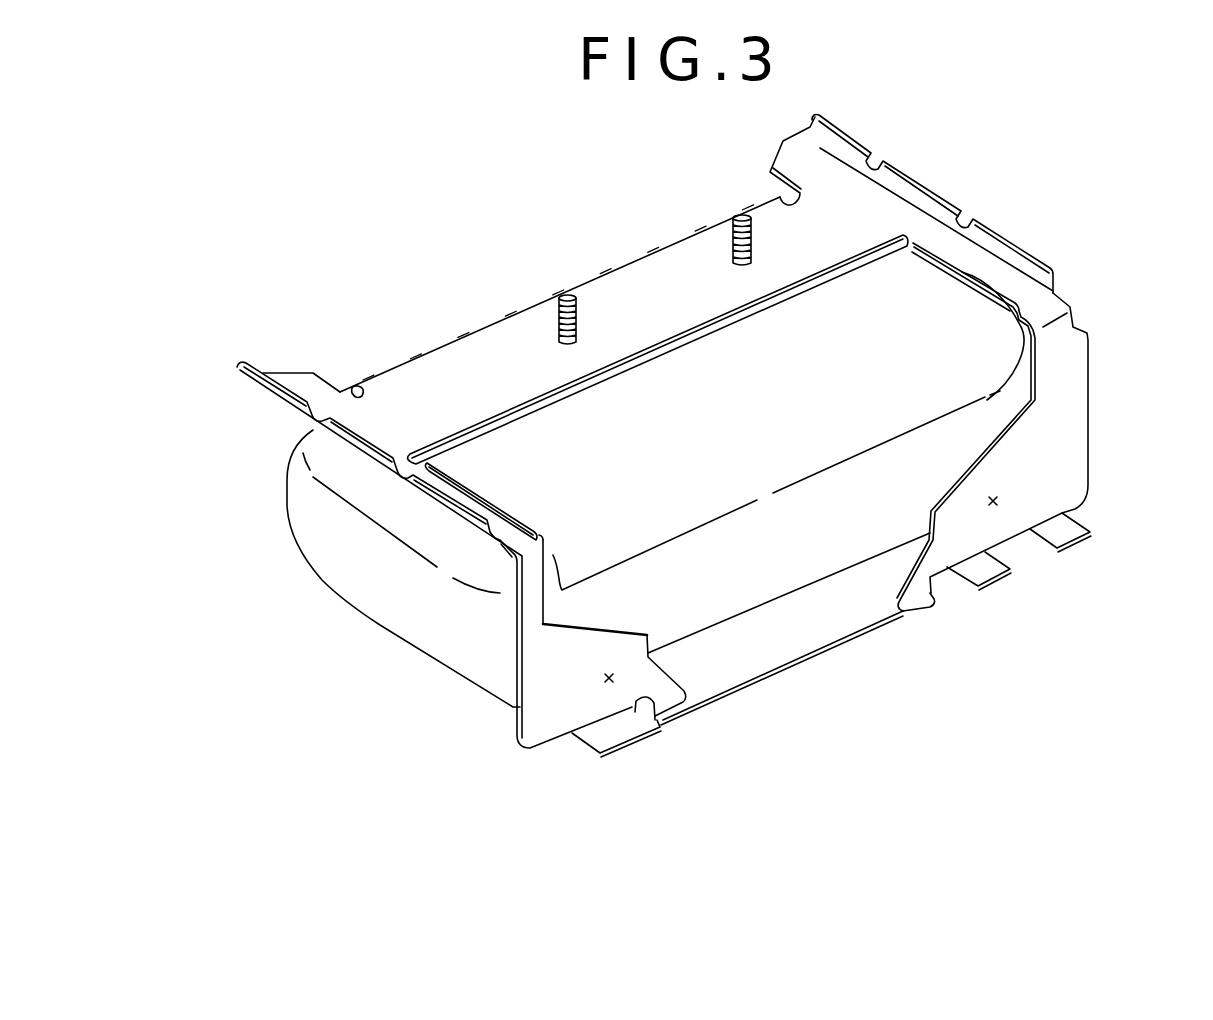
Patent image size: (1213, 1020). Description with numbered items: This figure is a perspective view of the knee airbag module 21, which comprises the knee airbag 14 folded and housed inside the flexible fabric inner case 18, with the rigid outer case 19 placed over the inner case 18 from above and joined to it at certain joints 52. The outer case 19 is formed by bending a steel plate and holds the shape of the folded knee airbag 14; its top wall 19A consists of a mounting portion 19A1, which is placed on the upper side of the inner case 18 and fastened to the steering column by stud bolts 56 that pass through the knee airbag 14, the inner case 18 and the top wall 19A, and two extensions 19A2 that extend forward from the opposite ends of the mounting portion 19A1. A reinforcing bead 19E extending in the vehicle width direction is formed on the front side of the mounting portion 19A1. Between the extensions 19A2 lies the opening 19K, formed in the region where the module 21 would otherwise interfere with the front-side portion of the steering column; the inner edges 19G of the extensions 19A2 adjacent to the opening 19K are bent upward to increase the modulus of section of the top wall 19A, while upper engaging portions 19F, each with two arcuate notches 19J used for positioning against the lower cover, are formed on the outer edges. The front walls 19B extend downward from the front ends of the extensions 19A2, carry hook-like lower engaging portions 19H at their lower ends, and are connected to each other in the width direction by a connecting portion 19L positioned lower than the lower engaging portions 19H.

The knee airbag 14 is at (815, 538).
The inner case 18 is at (758, 605).
The outer case 19 is at (623, 259).
The top wall 19A is at (518, 338).
The mounting portion 19A1 is at (532, 347).
The extensions 19A2 is at (510, 533).
The front walls 19B is at (1070, 365).
The reinforcing bead 19E is at (696, 330).
The upper engaging portions 19F is at (290, 386).
The edges 19G is at (946, 268).
The lower engaging portions 19H is at (1000, 580).
The arcuate notches 19J is at (318, 418).
The opening 19K is at (764, 403).
The connecting portion 19L is at (740, 697).
The knee airbag module 21 is at (720, 190).
The joints 52 is at (1000, 503).
The stud bolts 56 is at (577, 313).